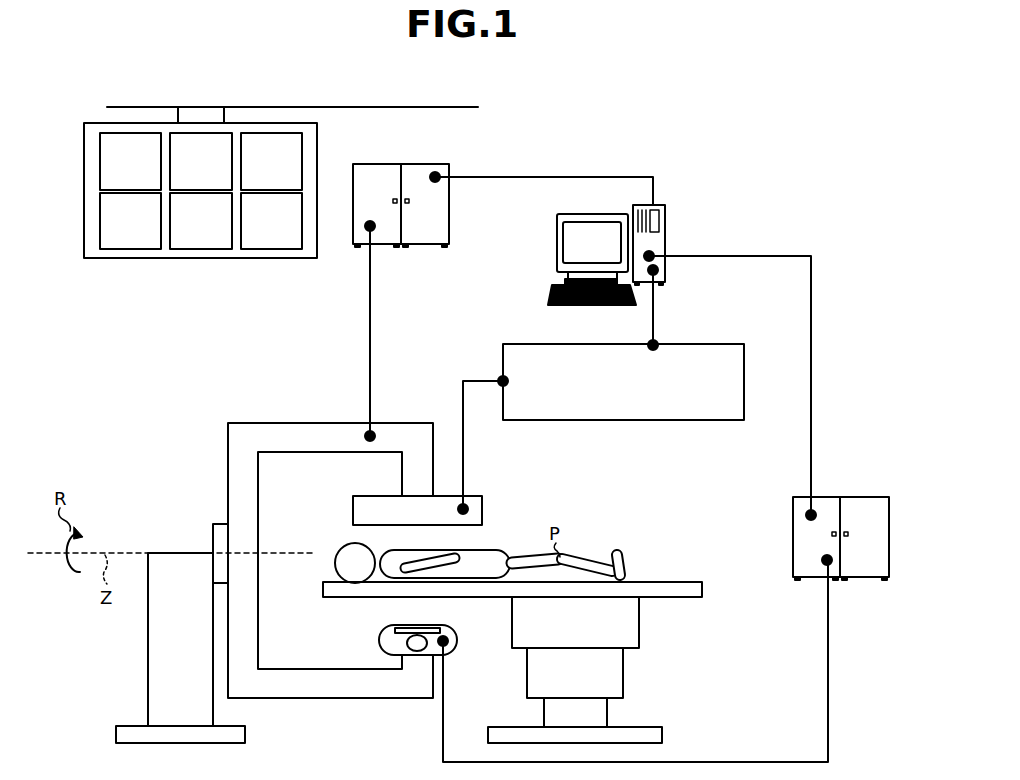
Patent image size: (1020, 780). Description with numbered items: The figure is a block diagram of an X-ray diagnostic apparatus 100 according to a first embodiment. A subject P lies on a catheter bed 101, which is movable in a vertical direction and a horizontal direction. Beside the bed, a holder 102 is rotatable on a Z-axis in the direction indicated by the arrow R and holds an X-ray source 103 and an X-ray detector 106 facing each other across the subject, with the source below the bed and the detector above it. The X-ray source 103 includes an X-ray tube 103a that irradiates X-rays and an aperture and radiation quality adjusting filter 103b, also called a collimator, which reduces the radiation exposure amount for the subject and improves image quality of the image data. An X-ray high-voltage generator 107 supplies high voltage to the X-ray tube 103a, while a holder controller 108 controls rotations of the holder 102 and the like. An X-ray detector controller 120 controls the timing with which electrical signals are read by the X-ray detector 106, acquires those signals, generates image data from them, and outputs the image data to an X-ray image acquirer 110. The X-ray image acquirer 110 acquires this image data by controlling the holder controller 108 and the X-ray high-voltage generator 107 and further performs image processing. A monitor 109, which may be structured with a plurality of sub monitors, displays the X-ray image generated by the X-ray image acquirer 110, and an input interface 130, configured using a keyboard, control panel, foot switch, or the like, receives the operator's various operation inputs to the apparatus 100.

The X-ray diagnostic apparatus 100 is at (595, 140).
The catheter bed 101 is at (623, 668).
The holder 102 is at (227, 450).
The X-ray source 103 is at (364, 636).
The X-ray tube 103a is at (389, 651).
The aperture and radiation quality adjusting filter 103b is at (407, 626).
The X-ray detector 106 is at (353, 510).
The X-ray high-voltage generator 107 is at (865, 496).
The holder controller 108 is at (425, 164).
The monitor 109 is at (317, 136).
The X-ray image acquirer 110 is at (666, 222).
The X-ray detector controller 120 is at (705, 344).
The input interface 130 is at (557, 238).